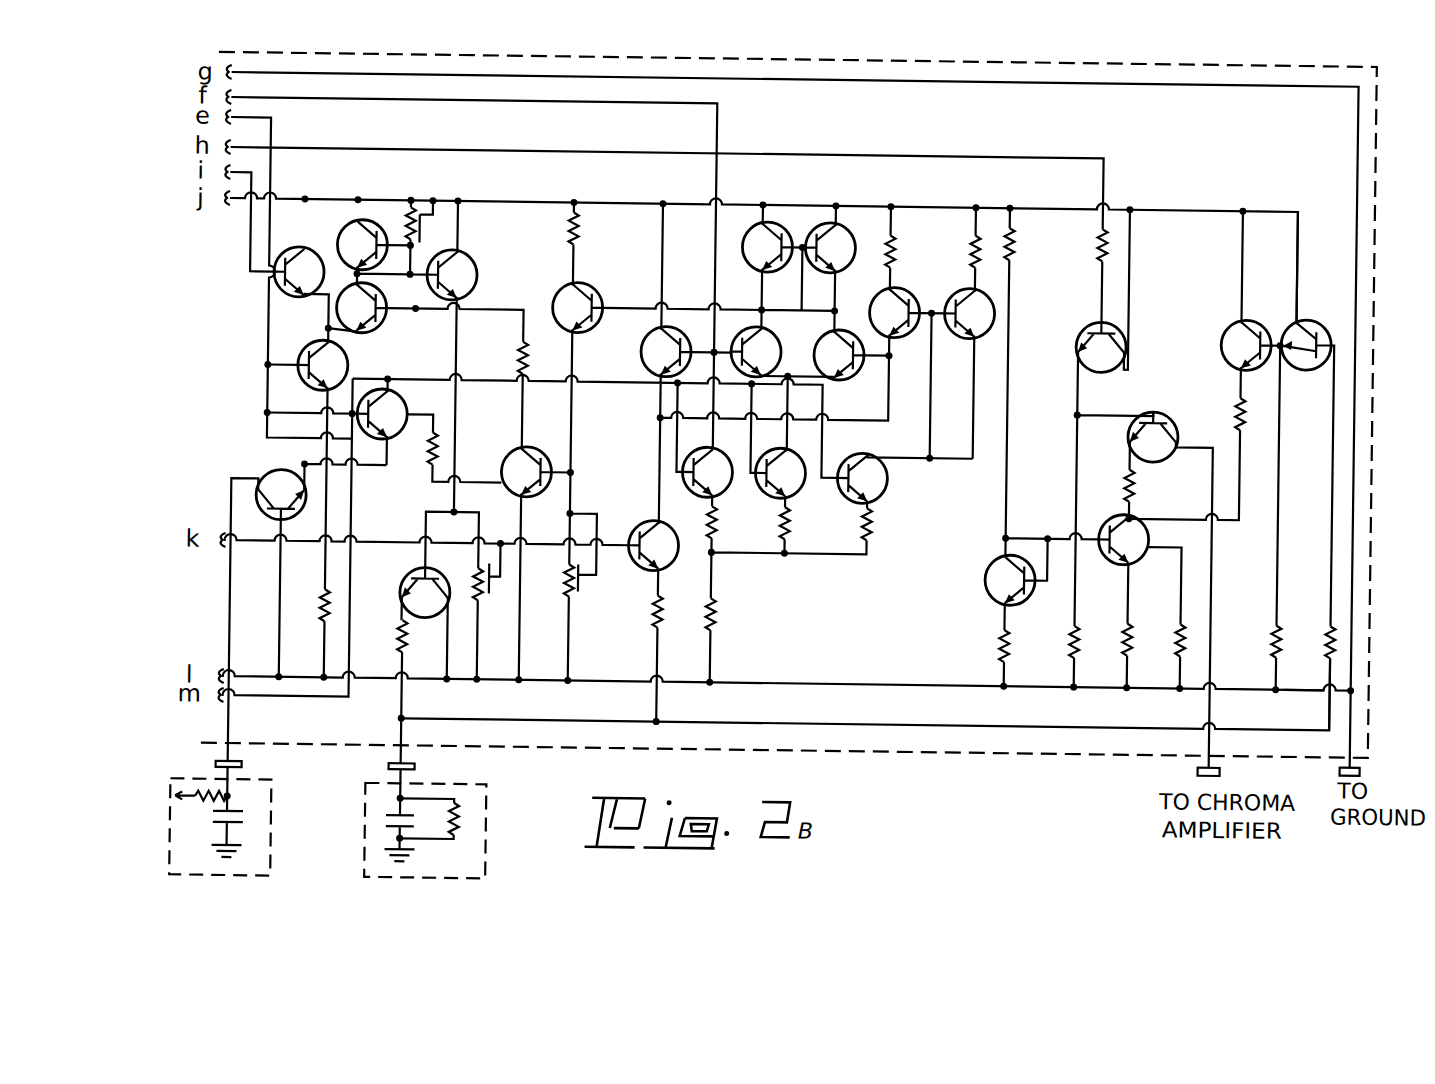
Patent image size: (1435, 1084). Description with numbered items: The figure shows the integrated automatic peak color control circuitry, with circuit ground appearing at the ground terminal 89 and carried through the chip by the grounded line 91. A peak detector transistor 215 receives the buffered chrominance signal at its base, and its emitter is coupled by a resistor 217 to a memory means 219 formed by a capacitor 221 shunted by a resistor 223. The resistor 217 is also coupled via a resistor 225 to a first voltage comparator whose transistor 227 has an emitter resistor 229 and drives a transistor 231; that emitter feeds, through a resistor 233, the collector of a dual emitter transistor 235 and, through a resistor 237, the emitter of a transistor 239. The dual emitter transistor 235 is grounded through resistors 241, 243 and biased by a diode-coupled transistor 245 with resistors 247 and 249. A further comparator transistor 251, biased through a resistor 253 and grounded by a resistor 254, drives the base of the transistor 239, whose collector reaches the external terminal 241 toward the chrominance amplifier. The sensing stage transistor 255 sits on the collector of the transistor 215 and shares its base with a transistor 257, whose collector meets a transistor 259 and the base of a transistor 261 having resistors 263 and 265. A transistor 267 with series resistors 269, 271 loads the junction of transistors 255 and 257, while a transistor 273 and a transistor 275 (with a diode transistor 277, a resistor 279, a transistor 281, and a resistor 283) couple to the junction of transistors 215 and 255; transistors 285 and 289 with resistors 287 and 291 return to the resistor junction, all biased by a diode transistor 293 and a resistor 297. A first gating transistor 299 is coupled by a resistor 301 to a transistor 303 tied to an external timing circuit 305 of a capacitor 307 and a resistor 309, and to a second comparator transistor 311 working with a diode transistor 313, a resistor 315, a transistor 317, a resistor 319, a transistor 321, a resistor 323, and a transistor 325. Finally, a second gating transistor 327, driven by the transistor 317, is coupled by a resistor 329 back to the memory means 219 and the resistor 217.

The ground terminal 89 is at (1345, 760).
The grounded line 91 is at (1284, 690).
The transistor 215 is at (643, 520).
The resistor 217 is at (660, 610).
The memory means 219 is at (497, 803).
The capacitor 221 is at (394, 830).
The resistor 223 is at (468, 820).
The resistor 225 is at (1343, 630).
The transistor 227 is at (1340, 322).
The resistor 229 is at (1278, 622).
The transistor 231 is at (1226, 336).
The resistor 233 is at (1242, 400).
The dual emitter transistor 235 is at (1112, 525).
The resistor 237 is at (1140, 475).
The transistor 239 is at (1158, 400).
The resistor / external terminal 241 is at (1182, 618).
The resistor 243 is at (1128, 618).
The diode-coupled transistor 245 is at (990, 572).
The resistor 247 is at (1003, 630).
The resistor 249 is at (1018, 240).
The transistor 251 is at (1080, 330).
The resistor 253 is at (1100, 255).
The resistor 254 is at (1074, 625).
The transistor 255 is at (644, 348).
The transistor 257 is at (800, 330).
The transistor 259 is at (800, 226).
The transistor 261 is at (555, 297).
The resistor 263 is at (580, 235).
The resistor 265 is at (580, 590).
The transistor 267 is at (730, 488).
The resistor 269 is at (722, 530).
The resistor 271 is at (722, 608).
The transistor 273 is at (856, 372).
The transistor 275 is at (873, 300).
The transistor 277 is at (838, 218).
The resistor 279 is at (896, 228).
The transistor 281 is at (958, 284).
The resistor 283 is at (980, 242).
The transistor 285 is at (890, 468).
The resistor 287 is at (878, 522).
The transistor 289 is at (805, 490).
The resistor 291 is at (797, 530).
The transistor 293 is at (442, 418).
The resistor 297 is at (432, 477).
The transistor 299 is at (508, 462).
The resistor 301 is at (522, 345).
The transistor 303 is at (262, 494).
The external timing circuit 305 is at (282, 802).
The capacitor 307 is at (255, 824).
The resistor 309 is at (212, 783).
The transistor 311 is at (365, 332).
The diode-connected transistor 313 is at (339, 246).
The resistor 315 is at (408, 208).
The transistor 317 is at (470, 258).
The resistor 319 is at (478, 578).
The transistor 321 is at (300, 366).
The resistor 323 is at (325, 604).
The transistor 325 is at (275, 288).
The transistor 327 is at (408, 586).
The resistor 329 is at (405, 630).